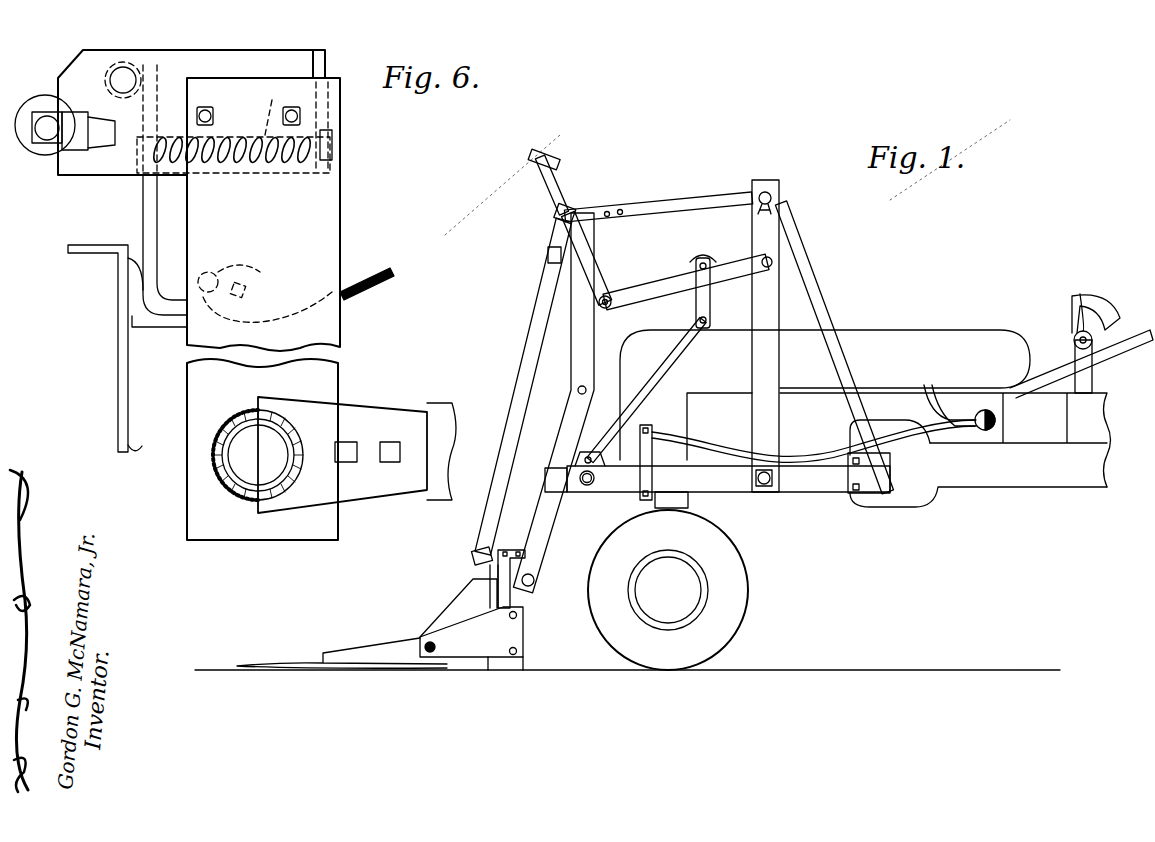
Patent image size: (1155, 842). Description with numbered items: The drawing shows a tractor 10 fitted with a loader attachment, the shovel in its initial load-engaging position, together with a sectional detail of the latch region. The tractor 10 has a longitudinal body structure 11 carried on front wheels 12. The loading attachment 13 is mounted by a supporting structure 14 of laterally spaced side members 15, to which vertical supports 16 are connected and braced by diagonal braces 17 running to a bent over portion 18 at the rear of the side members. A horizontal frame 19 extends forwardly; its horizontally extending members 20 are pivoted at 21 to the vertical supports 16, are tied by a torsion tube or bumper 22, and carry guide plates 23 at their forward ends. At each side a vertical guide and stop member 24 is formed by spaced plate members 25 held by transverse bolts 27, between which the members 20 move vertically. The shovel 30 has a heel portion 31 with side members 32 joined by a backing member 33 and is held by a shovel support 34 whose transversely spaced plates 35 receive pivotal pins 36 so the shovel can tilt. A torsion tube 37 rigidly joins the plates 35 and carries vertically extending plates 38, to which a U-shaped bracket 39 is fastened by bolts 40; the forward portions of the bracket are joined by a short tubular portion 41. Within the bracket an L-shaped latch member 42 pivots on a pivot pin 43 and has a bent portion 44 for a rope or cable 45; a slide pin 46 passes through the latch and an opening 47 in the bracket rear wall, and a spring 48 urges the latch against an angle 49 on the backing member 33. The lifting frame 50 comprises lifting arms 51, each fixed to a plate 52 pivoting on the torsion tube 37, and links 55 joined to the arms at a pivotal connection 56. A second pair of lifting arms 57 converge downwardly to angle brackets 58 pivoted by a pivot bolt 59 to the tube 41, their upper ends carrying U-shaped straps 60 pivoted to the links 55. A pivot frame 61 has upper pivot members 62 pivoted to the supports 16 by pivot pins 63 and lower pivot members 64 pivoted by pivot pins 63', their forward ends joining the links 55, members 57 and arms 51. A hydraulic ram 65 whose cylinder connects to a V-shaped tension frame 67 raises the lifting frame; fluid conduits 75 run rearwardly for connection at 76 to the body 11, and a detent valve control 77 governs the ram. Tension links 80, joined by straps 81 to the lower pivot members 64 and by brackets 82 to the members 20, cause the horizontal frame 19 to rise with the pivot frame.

In FIG. 1, the tractor 10 is at (935, 340).
In FIG. 1, the longitudinal body structure 11 is at (918, 500).
In FIG. 1, the front ground supports or wheels 12 is at (748, 618).
In FIG. 1, the loading attachment 13 is at (663, 188).
In FIG. 1, the supporting structure 14 is at (816, 259).
In FIG. 1, the side members 15 is at (842, 494).
In FIG. 1, the vertical supports 16 is at (782, 200).
In FIG. 1, the diagonal braces 17 is at (826, 317).
In FIG. 1, the bent over portion 18 is at (868, 474).
In FIG. 1, the horizontal frame 19 is at (584, 501).
In FIG. 1, the horizontally extending members 20 is at (727, 482).
In FIG. 1, the pivotal connection 21 is at (766, 486).
In FIG. 1, the torsion tube or bumper 22 is at (580, 476).
In FIG. 1, the guide plates 23 is at (545, 482).
In FIG. 1, the vertical guide and stop member 24 is at (626, 509).
In FIG. 1, the plate members 25 is at (682, 453).
In FIG. 1, the bolts 27 is at (647, 427).
In FIG. 1, the shovel 30 is at (262, 662).
In FIG. 6, the heel portion 31 is at (108, 412).
In FIG. 1, the heel portion 31 is at (452, 672).
In FIG. 1, the side members 32 is at (463, 607).
In FIG. 6, the backing member 33 is at (146, 454).
In FIG. 1, the shovel support 34 is at (541, 662).
In FIG. 1, the transversely spaced plates 35 is at (492, 660).
In FIG. 1, the pivotal pins 36 is at (430, 653).
In FIG. 6, the torsion tube 37 is at (225, 478).
In FIG. 6, the vertically extending plates 38 is at (330, 310).
In FIG. 1, the vertically extending plates 38 is at (510, 550).
In FIG. 6, the U-shaped bracket 39 is at (306, 60).
In FIG. 6, the bolts 40 is at (207, 112).
In FIG. 6, the short tubular portion 41 is at (32, 152).
In FIG. 6, the L-shaped latch member 42 is at (143, 220).
In FIG. 1, the L-shaped latch member 42 is at (490, 571).
In FIG. 6, the pivot pin 43 is at (126, 80).
In FIG. 6, the bent portion 44 is at (165, 300).
In FIG. 6, the rope or cable 45 is at (378, 272).
In FIG. 6, the slide pin 46 is at (267, 110).
In FIG. 6, the opening 47 is at (335, 133).
In FIG. 6, the spring 48 is at (338, 172).
In FIG. 6, the angle 49 is at (148, 325).
In FIG. 1, the lifting frame 50 is at (524, 338).
In FIG. 6, the lifting arms 51 is at (440, 425).
In FIG. 1, the lifting arms 51 is at (571, 413).
In FIG. 6, the plate 52 is at (345, 425).
In FIG. 1, the links 55 is at (603, 230).
In FIG. 1, the pivotal connection 56 is at (610, 292).
In FIG. 1, the second pair of lifting arms 57 is at (519, 380).
In FIG. 6, the angle brackets 58 is at (75, 148).
In FIG. 6, the pivot bolt 59 is at (42, 123).
In FIG. 1, the pivot bolt 59 is at (473, 554).
In FIG. 1, the U-shaped strap 60 is at (568, 212).
In FIG. 1, the pivot frame 61 is at (734, 189).
In FIG. 1, the upper pivot members 62 is at (688, 205).
In FIG. 1, the pivot pins 63 is at (782, 178).
In FIG. 1, the pivot pins 63' is at (815, 270).
In FIG. 1, the lower pivot members 64 is at (665, 283).
In FIG. 1, the hydraulic ram 65 is at (526, 207).
In FIG. 1, the V-shaped tension frame 67 is at (542, 233).
In FIG. 1, the fluid conduits 75 is at (947, 395).
In FIG. 1, the connection 76 is at (985, 432).
In FIG. 1, the detent valve control 77 is at (1092, 290).
In FIG. 1, the tension links 80 is at (678, 357).
In FIG. 1, the straps 81 is at (710, 302).
In FIG. 1, the brackets 82 is at (601, 480).